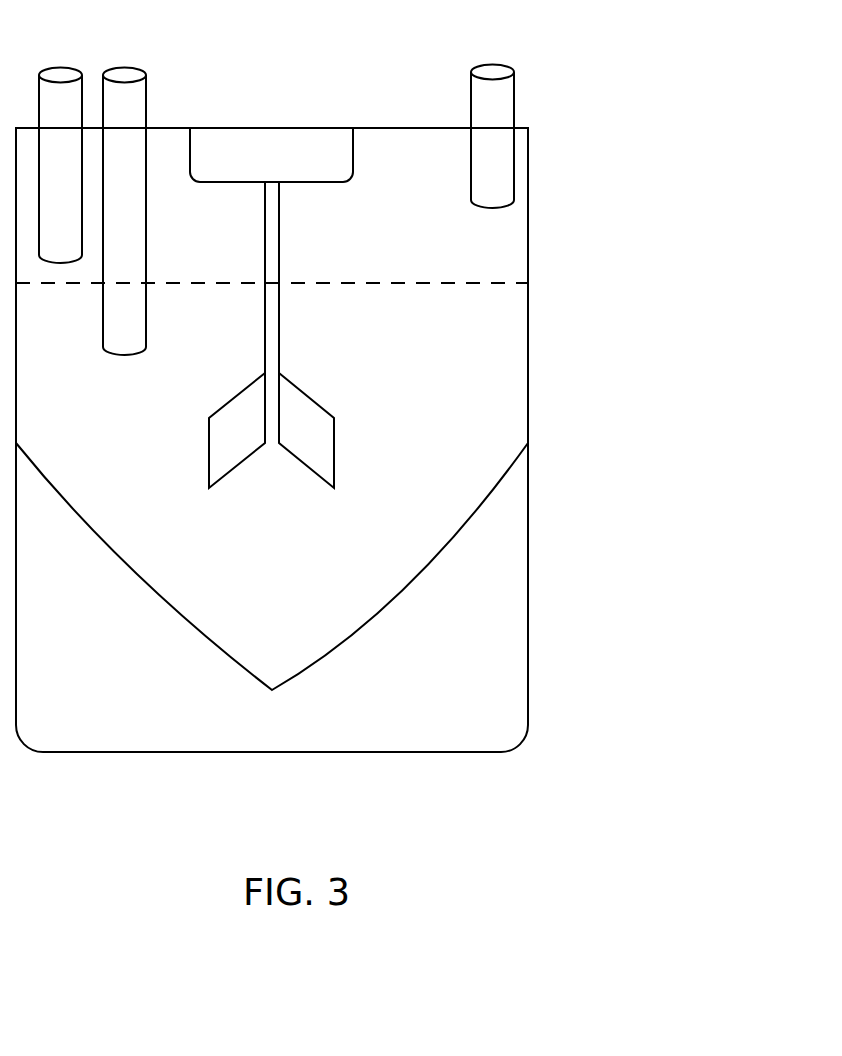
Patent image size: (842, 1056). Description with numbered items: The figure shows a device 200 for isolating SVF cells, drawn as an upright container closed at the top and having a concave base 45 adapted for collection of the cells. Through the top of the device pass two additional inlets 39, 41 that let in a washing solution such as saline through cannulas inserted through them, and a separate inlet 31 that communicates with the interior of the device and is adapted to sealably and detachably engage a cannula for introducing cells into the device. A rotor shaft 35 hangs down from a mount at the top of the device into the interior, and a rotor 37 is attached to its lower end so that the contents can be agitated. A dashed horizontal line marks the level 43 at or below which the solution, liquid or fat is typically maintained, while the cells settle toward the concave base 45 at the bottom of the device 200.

The device 200 is at (597, 128).
The inlet 31 is at (492, 113).
The rotor shaft 35 is at (293, 312).
The rotor 37 is at (301, 430).
The additional inlet 39 is at (60, 138).
The additional inlet 41 is at (124, 184).
The level 43 is at (299, 286).
The concave base 45 is at (272, 571).